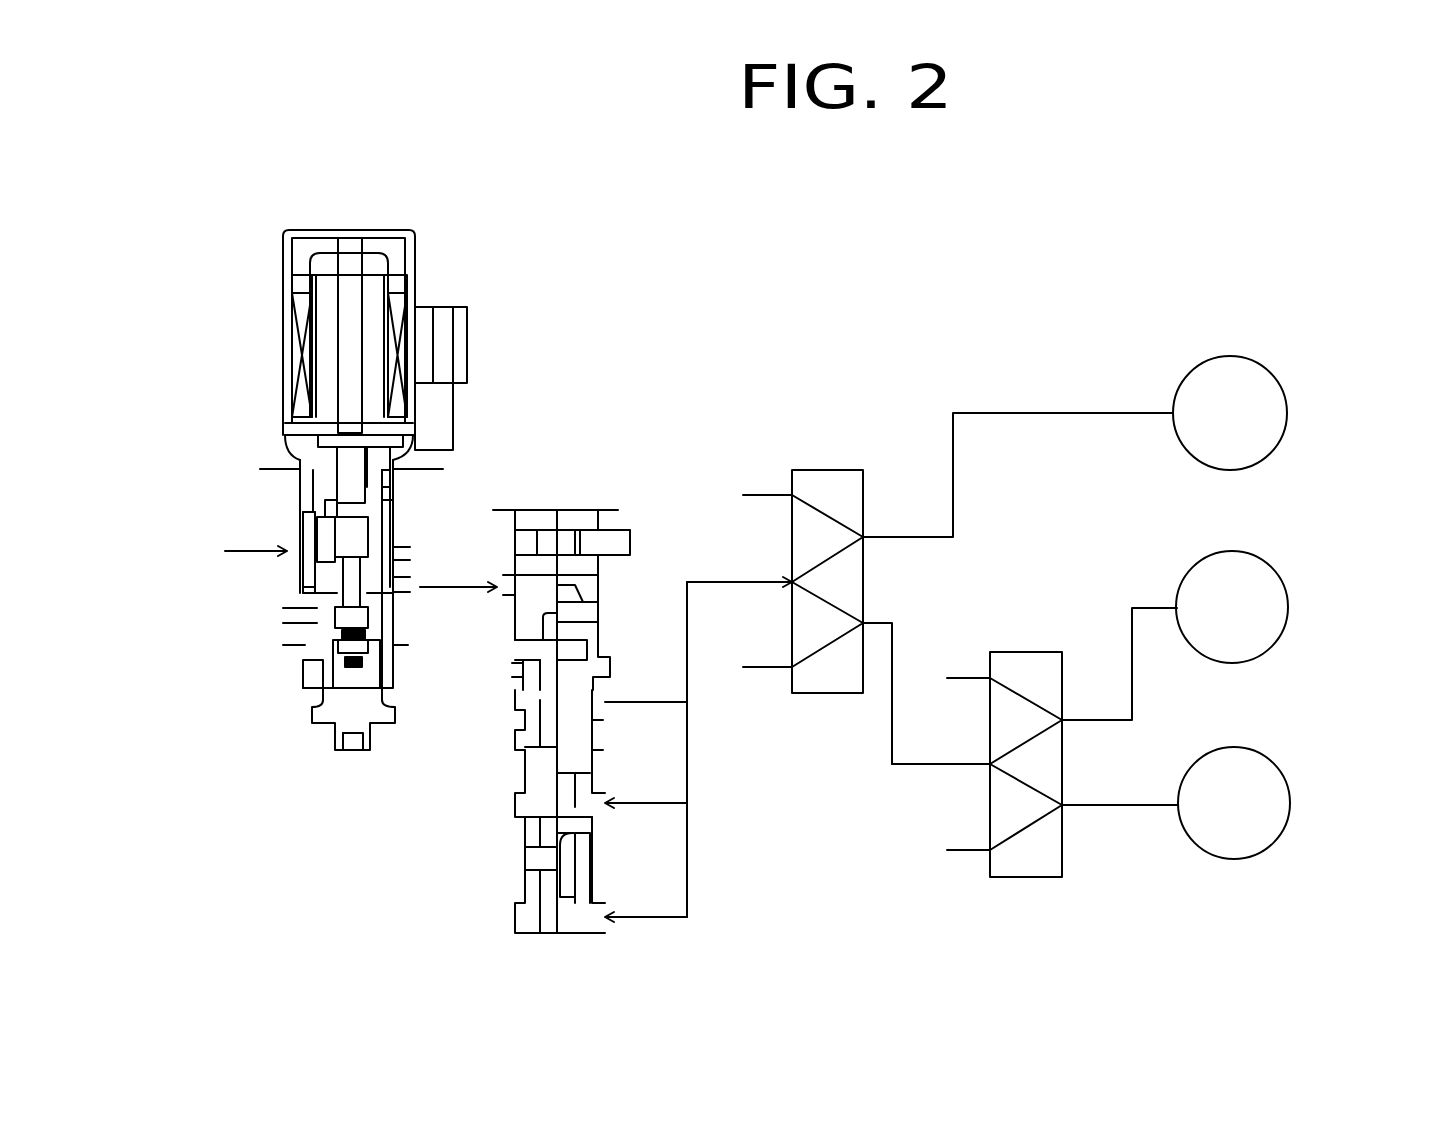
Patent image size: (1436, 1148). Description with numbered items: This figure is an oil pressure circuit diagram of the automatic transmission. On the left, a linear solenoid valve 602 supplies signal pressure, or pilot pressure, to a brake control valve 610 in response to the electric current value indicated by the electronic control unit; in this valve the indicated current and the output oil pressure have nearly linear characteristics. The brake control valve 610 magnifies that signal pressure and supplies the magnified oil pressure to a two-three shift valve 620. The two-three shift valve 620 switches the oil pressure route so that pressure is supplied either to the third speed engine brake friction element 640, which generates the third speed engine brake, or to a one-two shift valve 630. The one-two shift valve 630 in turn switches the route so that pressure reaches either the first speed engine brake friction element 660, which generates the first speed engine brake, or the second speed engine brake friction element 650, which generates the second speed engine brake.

The linear solenoid valve (SL2) 602 is at (392, 230).
The brake control valve 610 is at (572, 508).
The 2-3 shift valve 620 is at (865, 518).
The 1-2 shift valve 630 is at (1063, 743).
The engine brake friction element (B-1) 640 is at (1282, 382).
The engine brake friction element (B-2) 650 is at (1278, 568).
The engine brake friction element (B-4) 660 is at (1282, 770).